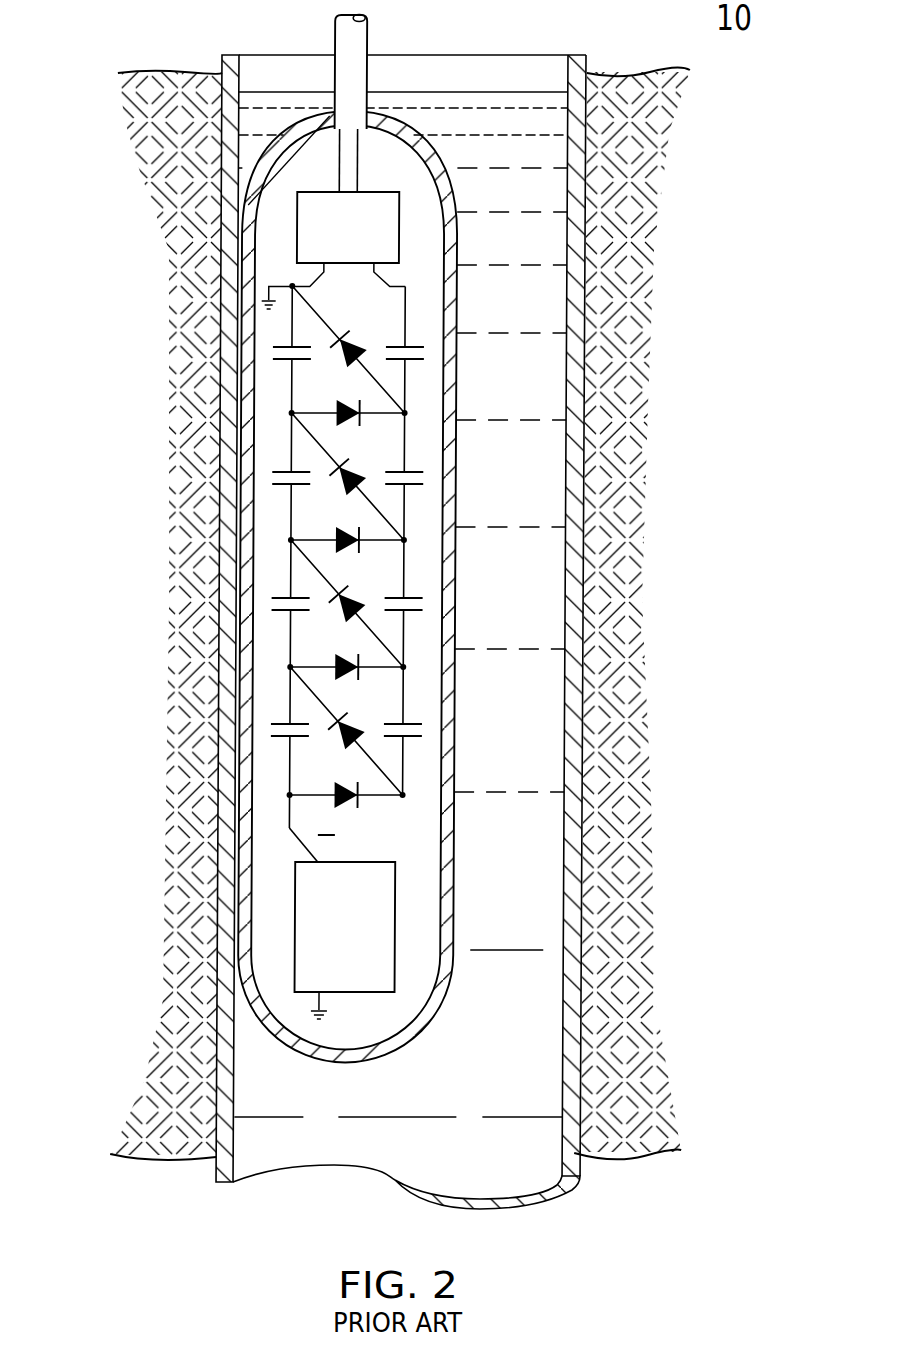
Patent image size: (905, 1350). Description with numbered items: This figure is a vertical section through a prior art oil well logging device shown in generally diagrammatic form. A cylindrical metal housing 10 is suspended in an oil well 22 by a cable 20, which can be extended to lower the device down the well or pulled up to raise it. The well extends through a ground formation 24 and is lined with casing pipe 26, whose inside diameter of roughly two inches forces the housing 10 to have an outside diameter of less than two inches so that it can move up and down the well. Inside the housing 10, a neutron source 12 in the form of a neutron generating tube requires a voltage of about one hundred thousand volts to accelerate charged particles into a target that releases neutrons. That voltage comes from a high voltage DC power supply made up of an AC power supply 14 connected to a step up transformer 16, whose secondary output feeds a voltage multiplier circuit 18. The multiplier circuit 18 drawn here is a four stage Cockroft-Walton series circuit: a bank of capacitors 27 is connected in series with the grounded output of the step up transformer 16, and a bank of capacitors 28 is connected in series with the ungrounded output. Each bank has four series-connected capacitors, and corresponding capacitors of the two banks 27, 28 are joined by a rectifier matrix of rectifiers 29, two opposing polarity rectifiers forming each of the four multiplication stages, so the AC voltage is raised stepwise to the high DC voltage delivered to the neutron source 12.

The housing 10 is at (457, 308).
The neutron source 12 is at (385, 896).
The AC power supply 14 is at (345, 157).
The step up transformer 16 is at (313, 238).
The voltage multiplier circuit 18 is at (245, 340).
The cable 20 is at (360, 34).
The oil well 22 is at (523, 387).
The ground formation 24 is at (617, 508).
The casing pipe 26 is at (575, 443).
The bank of capacitors 27 is at (270, 757).
The bank of capacitors 28 is at (420, 755).
The rectifiers 29 is at (383, 306).